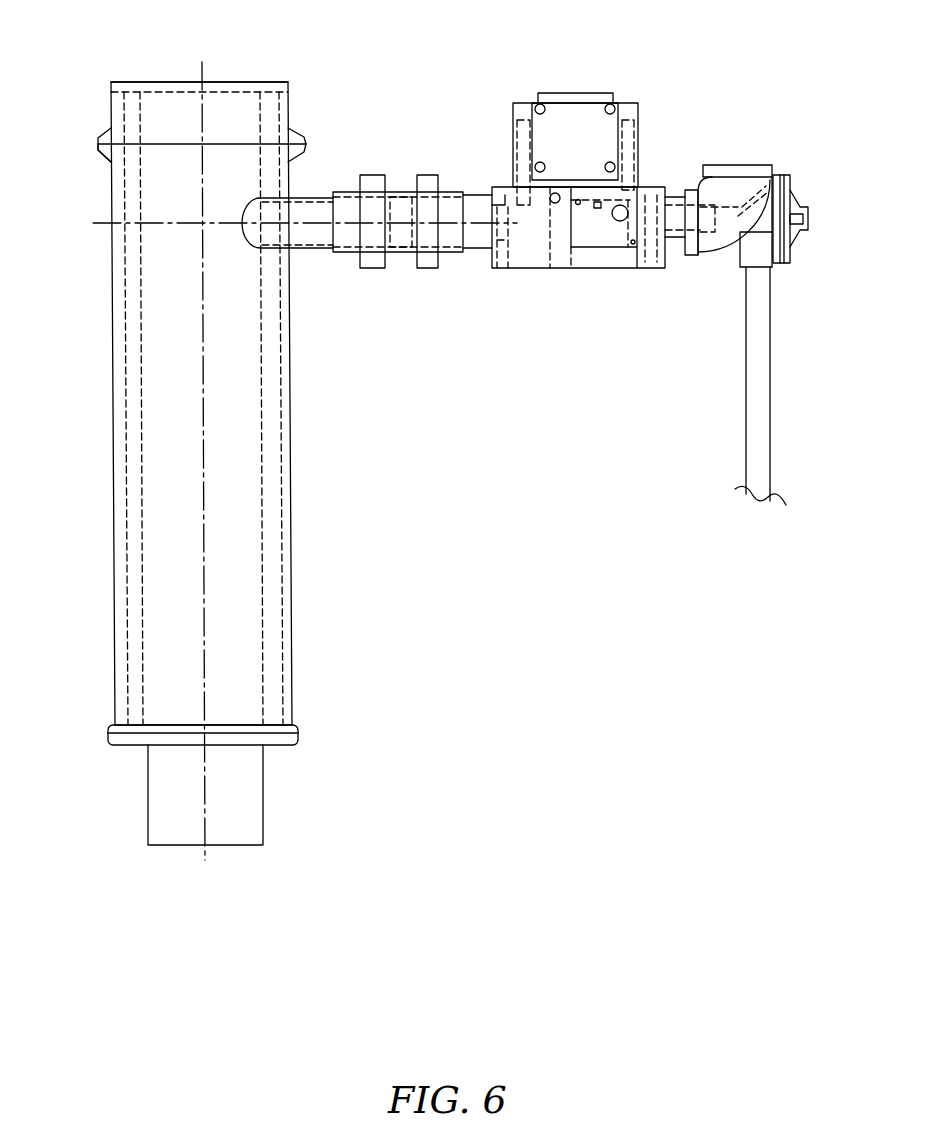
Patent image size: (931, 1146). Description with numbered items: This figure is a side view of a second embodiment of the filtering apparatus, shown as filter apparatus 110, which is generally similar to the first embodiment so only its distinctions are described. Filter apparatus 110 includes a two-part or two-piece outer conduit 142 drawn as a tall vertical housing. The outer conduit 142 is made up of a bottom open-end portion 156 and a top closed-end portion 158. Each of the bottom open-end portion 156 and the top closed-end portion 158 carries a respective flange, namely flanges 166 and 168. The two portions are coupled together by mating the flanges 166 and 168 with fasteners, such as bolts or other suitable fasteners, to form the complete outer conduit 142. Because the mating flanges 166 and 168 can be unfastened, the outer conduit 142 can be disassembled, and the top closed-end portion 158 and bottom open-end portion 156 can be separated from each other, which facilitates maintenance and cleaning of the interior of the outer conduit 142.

The filter apparatus 110 is at (466, 444).
The outer conduit 142 is at (115, 630).
The bottom open-end portion 156 is at (284, 743).
The top closed-end portion 158 is at (160, 82).
The flange 166 is at (111, 130).
The flange 168 is at (111, 160).